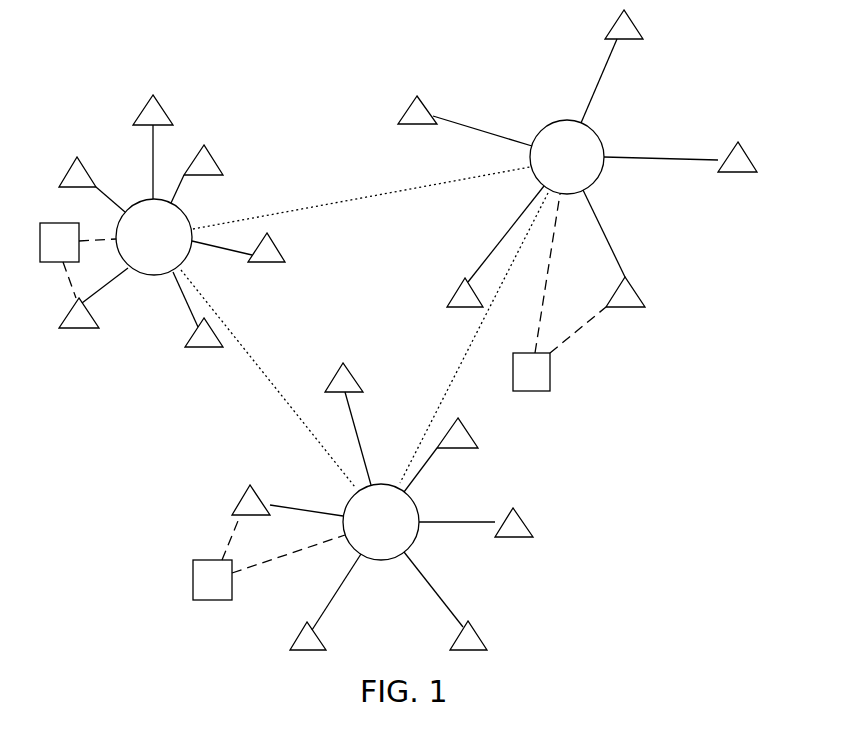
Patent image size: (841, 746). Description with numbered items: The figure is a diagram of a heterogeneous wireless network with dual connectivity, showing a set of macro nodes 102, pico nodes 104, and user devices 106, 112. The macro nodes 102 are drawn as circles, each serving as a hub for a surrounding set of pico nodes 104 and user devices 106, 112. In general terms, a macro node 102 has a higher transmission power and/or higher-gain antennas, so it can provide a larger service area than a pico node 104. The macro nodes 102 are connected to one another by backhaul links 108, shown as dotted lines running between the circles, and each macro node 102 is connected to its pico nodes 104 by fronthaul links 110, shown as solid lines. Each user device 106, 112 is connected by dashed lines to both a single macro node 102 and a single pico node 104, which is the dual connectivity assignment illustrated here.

The macro node 102 is at (598, 177).
The pico node 104 is at (636, 287).
The user device 106 is at (550, 370).
The backhaul link 108 is at (277, 393).
The fronthaul link 110 is at (433, 587).
The client device 112 is at (233, 538).